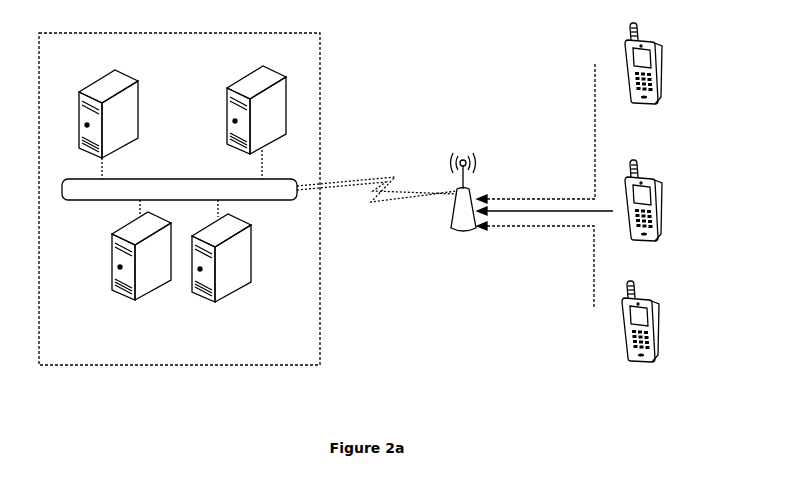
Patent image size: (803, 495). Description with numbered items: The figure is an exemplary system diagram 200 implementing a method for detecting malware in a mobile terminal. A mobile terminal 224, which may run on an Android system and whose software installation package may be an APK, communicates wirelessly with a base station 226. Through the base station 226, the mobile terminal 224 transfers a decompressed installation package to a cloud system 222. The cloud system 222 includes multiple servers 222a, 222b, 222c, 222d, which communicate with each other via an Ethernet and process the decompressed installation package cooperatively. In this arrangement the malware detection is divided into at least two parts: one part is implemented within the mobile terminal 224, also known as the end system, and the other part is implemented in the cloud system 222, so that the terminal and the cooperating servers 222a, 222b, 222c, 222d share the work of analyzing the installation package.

The system diagram 200 is at (460, 27).
The cloud system 222 is at (244, 360).
The server 222a is at (167, 78).
The server 222b is at (255, 127).
The server 222c is at (248, 265).
The server 222d is at (168, 265).
The mobile terminal 224 is at (656, 32).
The base station 226 is at (451, 277).